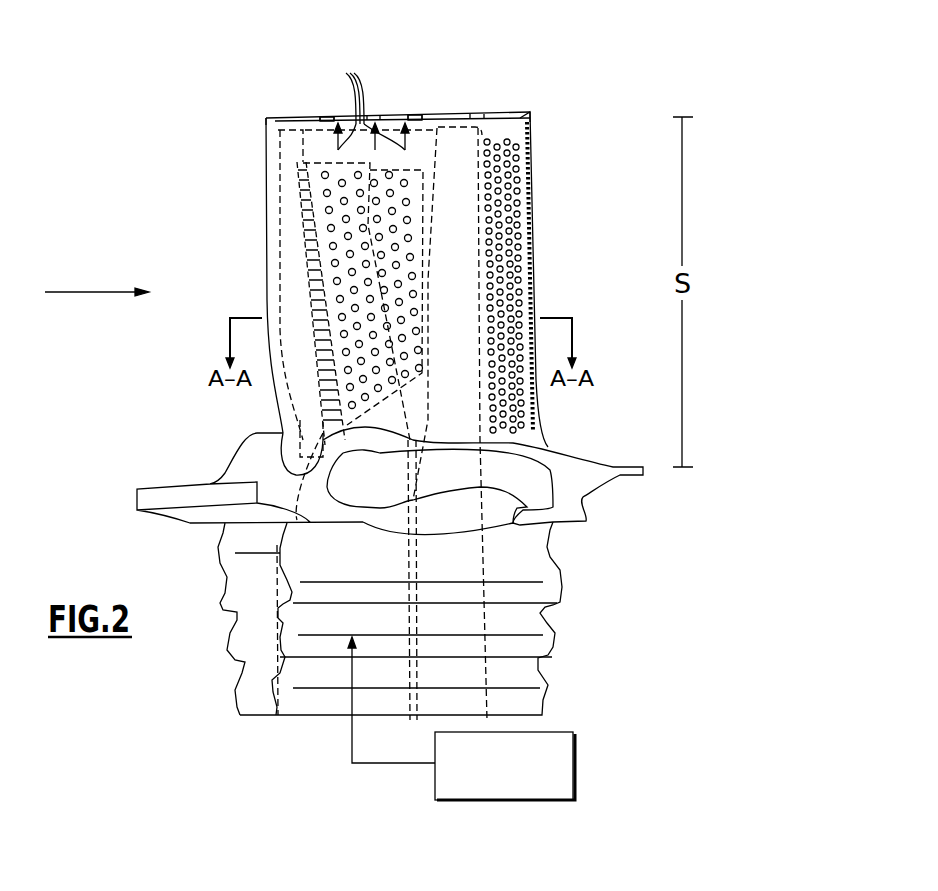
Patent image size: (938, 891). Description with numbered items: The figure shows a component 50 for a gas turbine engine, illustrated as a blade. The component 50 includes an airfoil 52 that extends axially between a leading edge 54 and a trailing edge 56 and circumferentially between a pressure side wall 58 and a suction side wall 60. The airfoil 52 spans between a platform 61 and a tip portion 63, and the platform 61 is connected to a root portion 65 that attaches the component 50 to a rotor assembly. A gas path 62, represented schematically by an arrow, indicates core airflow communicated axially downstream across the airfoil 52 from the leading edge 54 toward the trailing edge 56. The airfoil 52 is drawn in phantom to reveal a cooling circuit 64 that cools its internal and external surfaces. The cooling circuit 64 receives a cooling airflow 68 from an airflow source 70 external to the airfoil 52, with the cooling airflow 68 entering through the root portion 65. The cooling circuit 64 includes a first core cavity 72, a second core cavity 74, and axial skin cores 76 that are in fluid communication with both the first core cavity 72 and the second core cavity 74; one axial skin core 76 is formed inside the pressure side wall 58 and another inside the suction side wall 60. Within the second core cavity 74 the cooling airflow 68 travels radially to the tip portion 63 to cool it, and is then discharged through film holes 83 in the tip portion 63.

The component 50 is at (401, 73).
The airfoil 52 is at (500, 260).
The leading edge 54 is at (268, 292).
The trailing edge 56 is at (536, 300).
The pressure side wall 58 is at (468, 380).
The suction side wall 60 is at (255, 150).
The platform 61 is at (610, 466).
The gas path 62 is at (86, 292).
The tip portion 63 is at (535, 110).
The cooling circuit 64 is at (330, 180).
The root portion 65 is at (535, 618).
The cooling airflow 68 is at (322, 744).
The airflow source 70 is at (575, 753).
The first core cavity 72 is at (318, 603).
The second core cavity 74 is at (412, 157).
The axial skin cores 76 is at (418, 256).
The film holes 83 is at (332, 114).